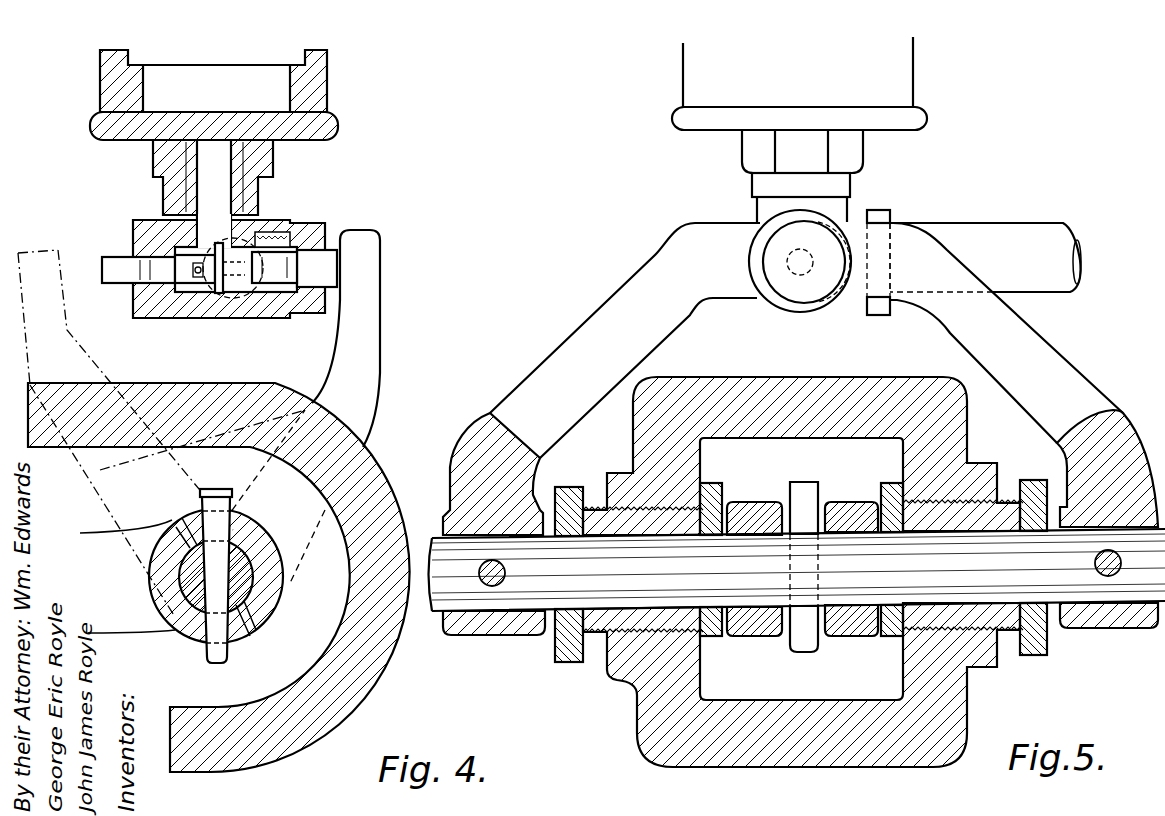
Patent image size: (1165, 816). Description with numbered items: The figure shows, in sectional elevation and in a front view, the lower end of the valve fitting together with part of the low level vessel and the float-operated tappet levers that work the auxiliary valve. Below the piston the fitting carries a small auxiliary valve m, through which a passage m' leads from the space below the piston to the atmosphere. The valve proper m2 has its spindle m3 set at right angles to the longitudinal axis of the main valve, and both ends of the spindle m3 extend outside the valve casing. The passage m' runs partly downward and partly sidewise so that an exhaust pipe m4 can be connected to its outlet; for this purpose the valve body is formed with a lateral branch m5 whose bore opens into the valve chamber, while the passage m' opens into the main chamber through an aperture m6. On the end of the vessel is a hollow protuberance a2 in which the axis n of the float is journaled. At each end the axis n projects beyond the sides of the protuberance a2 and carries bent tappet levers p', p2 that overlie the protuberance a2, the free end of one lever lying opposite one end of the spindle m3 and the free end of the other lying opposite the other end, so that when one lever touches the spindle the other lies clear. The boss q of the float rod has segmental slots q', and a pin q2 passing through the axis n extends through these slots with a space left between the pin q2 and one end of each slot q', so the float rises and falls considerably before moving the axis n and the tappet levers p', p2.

In FIG. 4, the auxiliary valve m is at (229, 235).
In FIG. 5, the auxiliary valve m is at (763, 221).
In FIG. 4, the passage m' is at (214, 148).
In FIG. 4, the valve proper m2 is at (242, 276).
In FIG. 4, the spindle m3 is at (119, 267).
In FIG. 5, the exhaust pipe m4 is at (1021, 247).
In FIG. 5, the lateral branch m5 is at (880, 208).
In FIG. 4, the aperture m6 is at (240, 231).
In FIG. 4, the tappet lever p' is at (171, 433).
In FIG. 5, the tappet lever p' is at (601, 429).
In FIG. 4, the tappet lever p2 is at (360, 370).
In FIG. 5, the tappet lever p2 is at (1024, 425).
In FIG. 4, the hollow protuberance a2 is at (381, 509).
In FIG. 5, the hollow protuberance a2 is at (803, 399).
In FIG. 4, the axis n is at (249, 592).
In FIG. 5, the axis n is at (797, 570).
In FIG. 4, the boss q is at (272, 623).
In FIG. 5, the boss q is at (802, 649).
In FIG. 4, the segmental slots q' is at (196, 576).
In FIG. 5, the segmental slots q' is at (802, 495).
In FIG. 4, the pin q2 is at (219, 525).
In FIG. 5, the pin q2 is at (813, 502).